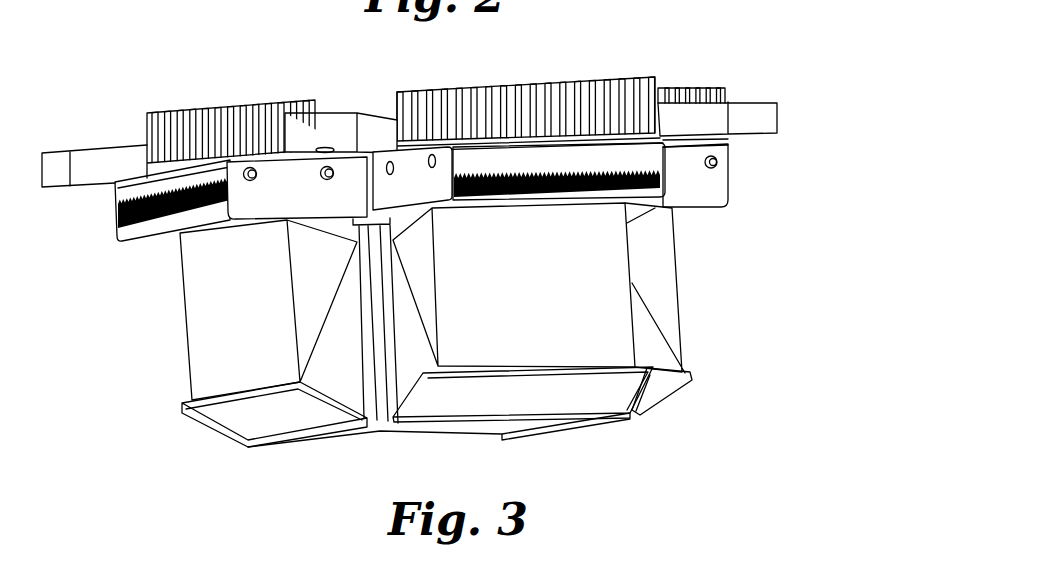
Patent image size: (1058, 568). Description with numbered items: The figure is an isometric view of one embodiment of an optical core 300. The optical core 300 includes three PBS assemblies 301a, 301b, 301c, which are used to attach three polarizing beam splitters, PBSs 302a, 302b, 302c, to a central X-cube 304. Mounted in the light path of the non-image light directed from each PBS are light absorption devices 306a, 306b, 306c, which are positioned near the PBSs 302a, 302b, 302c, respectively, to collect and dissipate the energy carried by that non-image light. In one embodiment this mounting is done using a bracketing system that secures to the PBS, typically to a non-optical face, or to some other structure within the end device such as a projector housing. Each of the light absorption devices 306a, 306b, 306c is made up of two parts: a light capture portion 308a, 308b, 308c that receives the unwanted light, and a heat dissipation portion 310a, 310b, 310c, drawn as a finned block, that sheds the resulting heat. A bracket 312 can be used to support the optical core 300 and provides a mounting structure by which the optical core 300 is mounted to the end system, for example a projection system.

The optical core 300 is at (760, 32).
The PBS assembly 301a is at (218, 423).
The PBS assembly 301b is at (450, 407).
The PBS assembly 301c is at (658, 407).
The PBS 302a is at (198, 333).
The PBS 302b is at (582, 342).
The PBS 302c is at (665, 280).
The X-cube 304 is at (487, 428).
The light absorption device 306a is at (172, 143).
The light absorption device 306b is at (605, 117).
The light absorption device 306c is at (749, 120).
The light capture portion 308a is at (118, 200).
The light capture portion 308b is at (653, 157).
The light capture portion 308c is at (728, 167).
The heat dissipation portion 310a is at (192, 103).
The heat dissipation portion 310b is at (592, 77).
The heat dissipation portion 310c is at (705, 88).
The bracket 312 is at (53, 157).